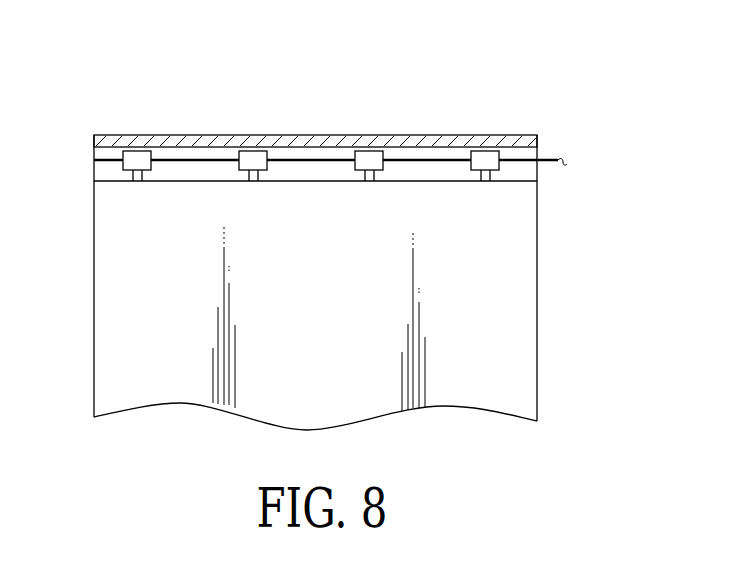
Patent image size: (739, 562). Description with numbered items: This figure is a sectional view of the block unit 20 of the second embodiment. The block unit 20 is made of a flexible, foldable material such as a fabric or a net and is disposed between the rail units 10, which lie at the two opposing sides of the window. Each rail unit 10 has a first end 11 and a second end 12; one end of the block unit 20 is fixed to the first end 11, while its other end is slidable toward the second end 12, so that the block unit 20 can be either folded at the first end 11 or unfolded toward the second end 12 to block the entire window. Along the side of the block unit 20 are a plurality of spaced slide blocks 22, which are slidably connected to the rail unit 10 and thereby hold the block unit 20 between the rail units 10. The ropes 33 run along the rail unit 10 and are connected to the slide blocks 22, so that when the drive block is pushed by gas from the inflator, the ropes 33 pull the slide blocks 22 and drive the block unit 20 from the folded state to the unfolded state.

The rail unit 10 is at (116, 126).
The first end 11 is at (92, 143).
The second end 12 is at (538, 145).
The block unit 20 is at (548, 287).
The slide block 22 is at (140, 155).
The rope 33 is at (305, 160).